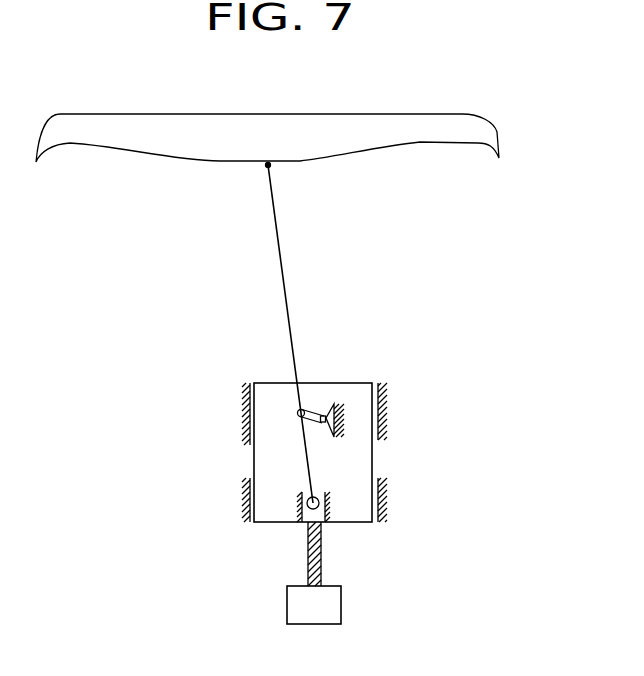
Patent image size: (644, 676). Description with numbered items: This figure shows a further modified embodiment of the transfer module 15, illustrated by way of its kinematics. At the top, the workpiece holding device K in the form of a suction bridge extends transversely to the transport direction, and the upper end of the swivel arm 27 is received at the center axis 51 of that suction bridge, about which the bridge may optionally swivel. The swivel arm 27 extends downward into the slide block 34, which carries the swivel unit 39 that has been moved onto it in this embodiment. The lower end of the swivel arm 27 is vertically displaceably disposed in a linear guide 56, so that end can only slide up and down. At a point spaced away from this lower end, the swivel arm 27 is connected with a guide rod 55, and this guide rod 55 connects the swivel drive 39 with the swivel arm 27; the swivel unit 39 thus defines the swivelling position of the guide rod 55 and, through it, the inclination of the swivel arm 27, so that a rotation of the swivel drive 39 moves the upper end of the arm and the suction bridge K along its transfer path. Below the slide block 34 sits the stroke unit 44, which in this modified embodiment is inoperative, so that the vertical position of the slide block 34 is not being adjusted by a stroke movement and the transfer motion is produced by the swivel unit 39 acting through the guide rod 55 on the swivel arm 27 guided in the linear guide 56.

The handlebar K is at (497, 130).
The swivel arm 27 is at (283, 266).
The center axis 51 is at (267, 168).
The transfer module 15 is at (218, 411).
The linear slide block 34 is at (360, 448).
The guide rod 55 is at (305, 411).
The swivel unit 39 is at (327, 402).
The linear guide 56 is at (327, 510).
The stroke drive 44 is at (349, 578).